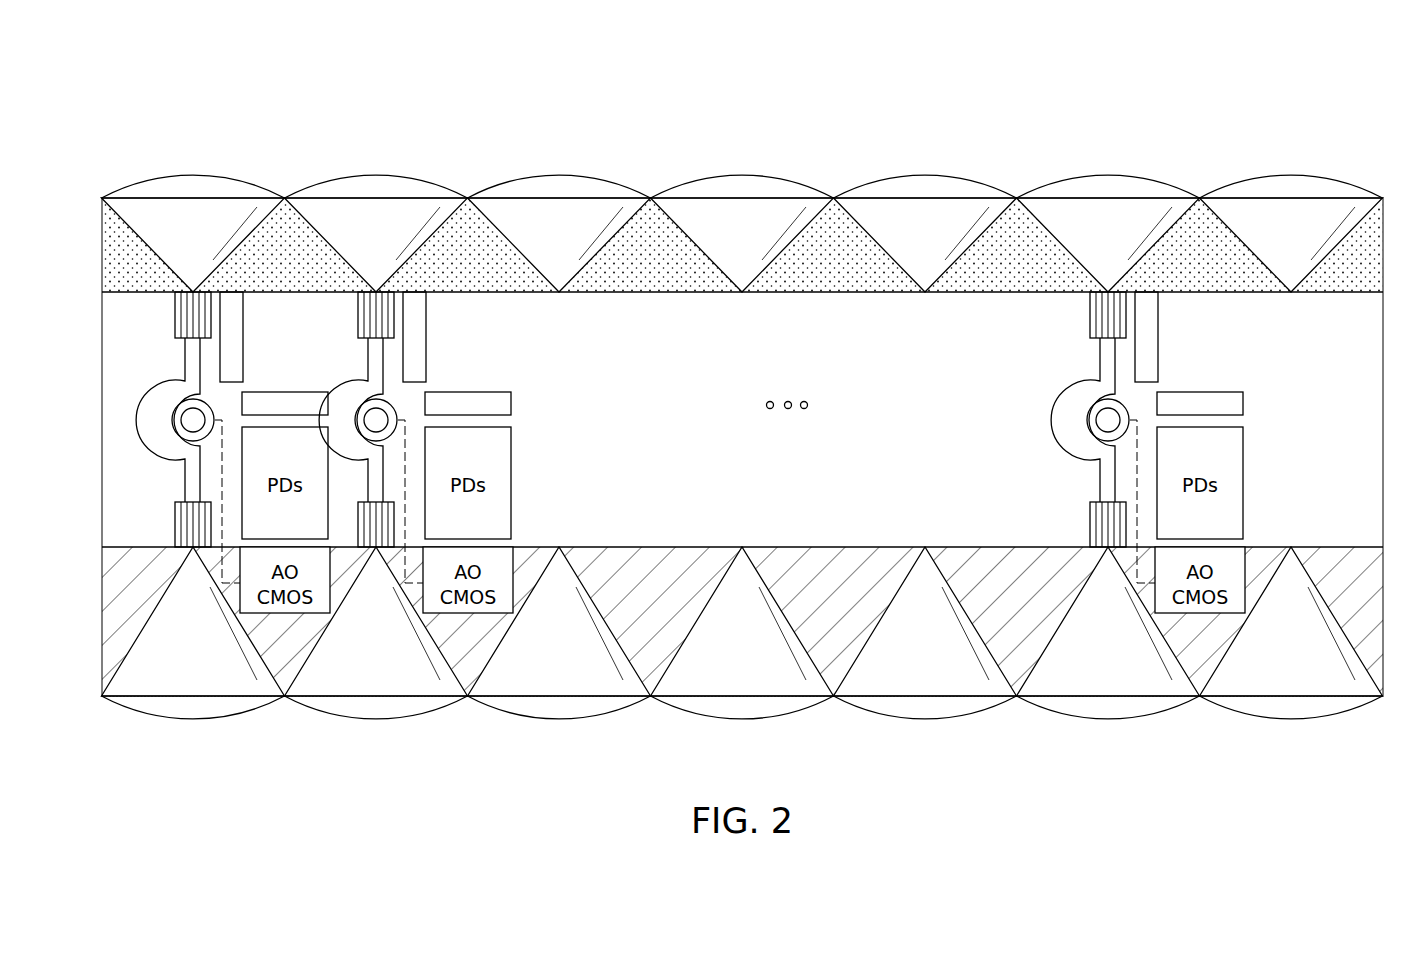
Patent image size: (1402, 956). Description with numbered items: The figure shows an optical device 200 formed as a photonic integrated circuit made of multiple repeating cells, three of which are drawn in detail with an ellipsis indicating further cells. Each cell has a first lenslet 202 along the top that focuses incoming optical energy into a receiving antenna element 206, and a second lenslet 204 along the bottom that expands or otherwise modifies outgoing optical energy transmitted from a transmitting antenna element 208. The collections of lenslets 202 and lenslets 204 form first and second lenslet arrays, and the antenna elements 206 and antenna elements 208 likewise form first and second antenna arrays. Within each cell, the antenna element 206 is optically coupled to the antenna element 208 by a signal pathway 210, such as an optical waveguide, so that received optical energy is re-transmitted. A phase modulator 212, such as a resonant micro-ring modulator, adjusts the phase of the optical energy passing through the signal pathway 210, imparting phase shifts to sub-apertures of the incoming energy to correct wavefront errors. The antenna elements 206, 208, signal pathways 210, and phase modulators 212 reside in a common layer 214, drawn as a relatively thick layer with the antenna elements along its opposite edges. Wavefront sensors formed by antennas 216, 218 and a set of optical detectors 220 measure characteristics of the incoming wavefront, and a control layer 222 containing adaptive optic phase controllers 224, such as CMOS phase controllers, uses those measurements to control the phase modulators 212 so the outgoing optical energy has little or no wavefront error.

The optical device 200 is at (452, 93).
The first lenslet 202 is at (190, 175).
The second lenslet 204 is at (193, 722).
The antenna element 206 is at (1093, 325).
The antenna element 208 is at (1093, 515).
The signal pathway 210 is at (1072, 420).
The phase modulator 212 is at (1095, 428).
The common layer 214 is at (92, 423).
The antenna 216 is at (515, 400).
The antenna 218 is at (428, 340).
The optical detectors 220 is at (515, 483).
The control layer 222 is at (100, 606).
The adaptive optic phase controller 224 is at (1250, 560).